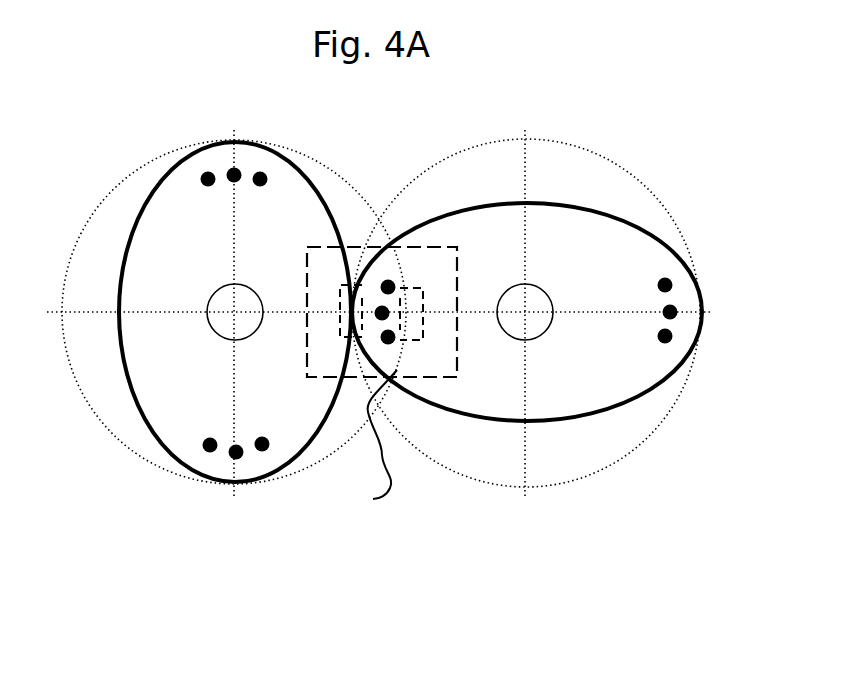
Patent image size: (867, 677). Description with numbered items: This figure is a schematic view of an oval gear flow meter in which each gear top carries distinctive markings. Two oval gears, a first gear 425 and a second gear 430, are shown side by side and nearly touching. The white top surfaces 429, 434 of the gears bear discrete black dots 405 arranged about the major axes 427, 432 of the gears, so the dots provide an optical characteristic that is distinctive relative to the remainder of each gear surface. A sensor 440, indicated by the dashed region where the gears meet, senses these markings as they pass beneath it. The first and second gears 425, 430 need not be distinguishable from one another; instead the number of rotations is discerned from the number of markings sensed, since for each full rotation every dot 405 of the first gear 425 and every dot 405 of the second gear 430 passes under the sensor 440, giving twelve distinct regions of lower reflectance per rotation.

The first oval gear 425 is at (158, 183).
The top surface of the first gear 429 is at (163, 247).
The major axis of the first gear 427 is at (238, 468).
The discrete dots 405 is at (270, 178).
The second oval gear 430 is at (592, 208).
The top surface of the second gear 434 is at (597, 243).
The major axis of the second gear 432 is at (687, 312).
The sensor 440 is at (435, 380).